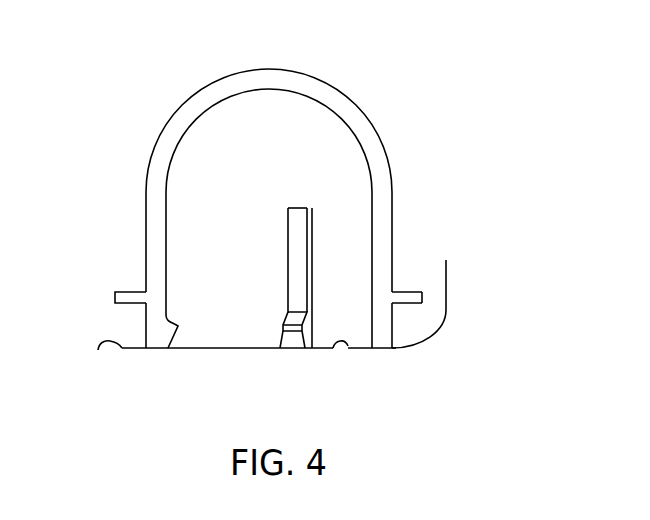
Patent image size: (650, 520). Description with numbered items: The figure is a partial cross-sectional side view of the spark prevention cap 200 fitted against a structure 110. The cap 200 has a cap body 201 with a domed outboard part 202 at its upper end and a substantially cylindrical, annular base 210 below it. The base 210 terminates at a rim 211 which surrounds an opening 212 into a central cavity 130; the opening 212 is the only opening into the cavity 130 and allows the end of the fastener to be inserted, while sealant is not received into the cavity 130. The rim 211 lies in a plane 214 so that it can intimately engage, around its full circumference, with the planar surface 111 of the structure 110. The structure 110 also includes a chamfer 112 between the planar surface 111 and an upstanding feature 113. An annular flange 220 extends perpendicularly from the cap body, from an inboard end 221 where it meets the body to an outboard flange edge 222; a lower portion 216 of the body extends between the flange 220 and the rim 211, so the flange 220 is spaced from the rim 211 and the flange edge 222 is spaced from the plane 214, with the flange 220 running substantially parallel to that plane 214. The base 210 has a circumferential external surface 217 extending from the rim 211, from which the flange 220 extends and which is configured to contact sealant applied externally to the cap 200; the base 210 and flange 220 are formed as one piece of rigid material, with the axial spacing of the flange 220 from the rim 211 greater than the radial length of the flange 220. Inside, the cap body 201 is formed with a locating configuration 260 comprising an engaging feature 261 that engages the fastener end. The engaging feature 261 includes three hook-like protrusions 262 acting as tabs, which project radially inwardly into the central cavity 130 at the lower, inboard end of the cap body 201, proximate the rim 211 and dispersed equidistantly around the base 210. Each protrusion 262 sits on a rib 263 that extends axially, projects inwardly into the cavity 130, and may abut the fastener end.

The cap 200 is at (193, 110).
The domed outboard part 202 is at (323, 93).
The central cavity 130 is at (343, 150).
The cap body 201 is at (391, 172).
The base 210 is at (160, 212).
The flange 220 is at (115, 293).
The external surface 217 is at (145, 316).
The plane 214 is at (98, 350).
The rim 211 is at (157, 348).
The opening 212 is at (228, 348).
The planar surface 111 is at (348, 348).
The lower portion 216 is at (394, 333).
The inboard end 221 is at (393, 292).
The flange edge 222 is at (430, 292).
The upstanding feature 113 is at (447, 275).
The chamfer 112 is at (430, 332).
The locating configuration 260 is at (305, 263).
The rib 263 is at (297, 220).
The protrusion 262 is at (288, 308).
The structure 110 is at (285, 352).
The engaging feature 261 is at (207, 302).